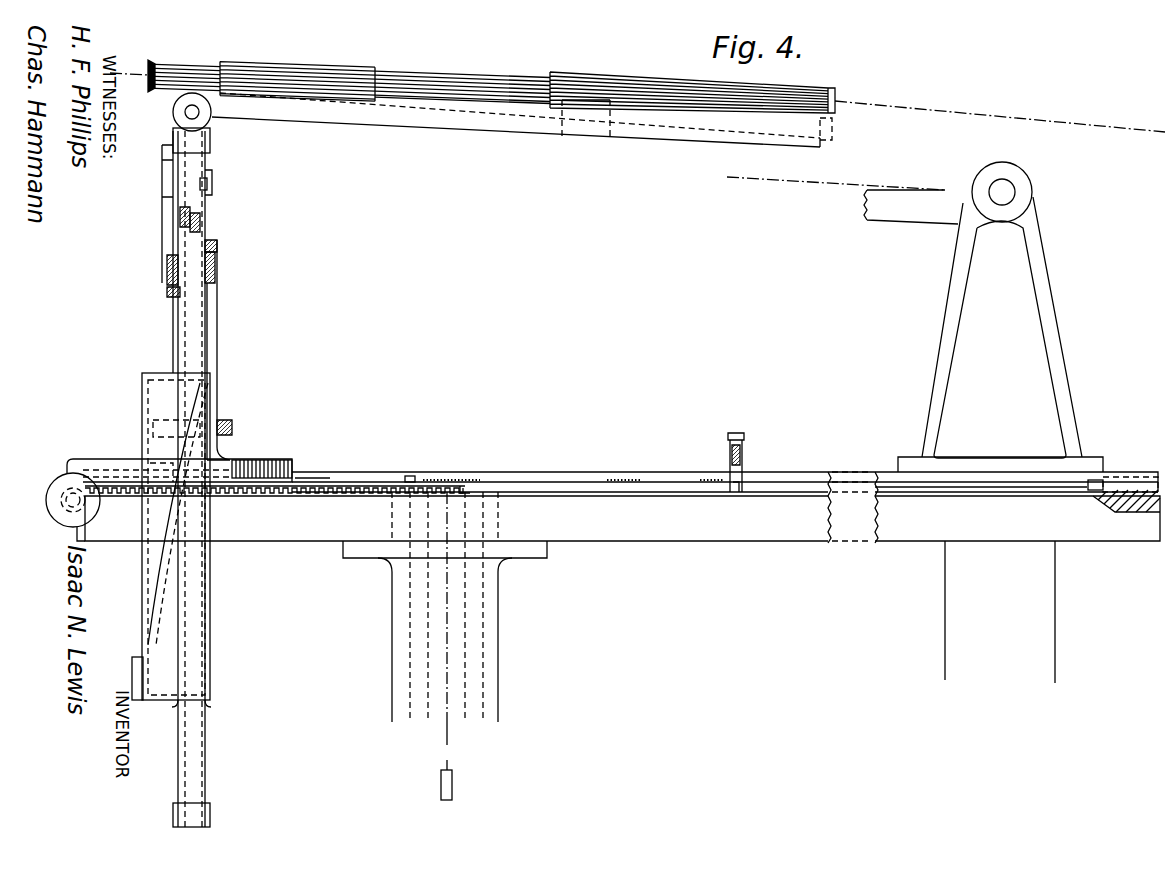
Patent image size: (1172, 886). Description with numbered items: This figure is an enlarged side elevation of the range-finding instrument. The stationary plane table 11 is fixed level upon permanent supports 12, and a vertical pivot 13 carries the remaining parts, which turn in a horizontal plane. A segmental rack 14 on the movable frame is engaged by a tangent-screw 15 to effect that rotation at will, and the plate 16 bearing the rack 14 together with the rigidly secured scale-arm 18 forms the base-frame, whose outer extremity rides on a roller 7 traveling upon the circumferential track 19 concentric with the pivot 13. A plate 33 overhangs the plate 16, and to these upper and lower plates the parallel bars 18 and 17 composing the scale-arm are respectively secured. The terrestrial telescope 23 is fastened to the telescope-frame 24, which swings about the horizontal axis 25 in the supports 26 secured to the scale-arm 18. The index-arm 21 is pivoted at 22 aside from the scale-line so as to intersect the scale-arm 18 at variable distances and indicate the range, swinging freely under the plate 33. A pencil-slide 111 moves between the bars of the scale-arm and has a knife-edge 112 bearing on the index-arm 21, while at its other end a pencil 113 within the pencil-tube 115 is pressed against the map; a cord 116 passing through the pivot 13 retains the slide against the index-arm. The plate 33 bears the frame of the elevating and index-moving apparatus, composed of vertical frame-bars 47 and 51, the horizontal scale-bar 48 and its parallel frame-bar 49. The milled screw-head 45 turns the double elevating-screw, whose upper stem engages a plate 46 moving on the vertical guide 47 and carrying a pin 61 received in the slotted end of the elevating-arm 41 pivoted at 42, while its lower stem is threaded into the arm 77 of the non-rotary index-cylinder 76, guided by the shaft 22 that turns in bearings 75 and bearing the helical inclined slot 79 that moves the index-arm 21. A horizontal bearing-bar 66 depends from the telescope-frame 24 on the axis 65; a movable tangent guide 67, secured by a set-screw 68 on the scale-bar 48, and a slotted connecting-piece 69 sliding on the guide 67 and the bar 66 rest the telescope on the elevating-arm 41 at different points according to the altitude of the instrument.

The roller 7 is at (1125, 477).
The stationary plane table 11 is at (235, 532).
The permanent supports 12 is at (996, 589).
The vertical pivot 13 is at (473, 595).
The segmental rack 14 is at (110, 493).
The tangent-screw 15 is at (60, 502).
The plate 16 is at (262, 493).
The parallel bar 17 is at (772, 493).
The scale-arm 18 is at (348, 472).
The circumferential track 19 is at (1122, 505).
The index-arm 21 is at (312, 472).
The axis of the index-arm 22 is at (177, 324).
The terrestrial telescope 23 is at (637, 96).
The telescope-frame 24 is at (585, 158).
The horizontal axis 25 is at (1017, 190).
The supports 26 is at (1062, 340).
The plate 33 is at (255, 462).
The elevating-arm 41 is at (201, 224).
The pivot 42 is at (216, 247).
The milled screw-head 45 is at (233, 427).
The plate 46 is at (213, 183).
The vertical frame-bar 47 is at (218, 322).
The horizontal scale-bar 48 is at (170, 268).
The frame-bar 49 is at (216, 270).
The vertical frame-bar 51 is at (191, 479).
The pin 61 is at (213, 175).
The axis 65 is at (190, 112).
The horizontal bearing-bar 66 is at (182, 214).
The movable tangent guide 67 is at (166, 178).
The set-screw 68 is at (170, 292).
The slotted connecting-piece 69 is at (168, 198).
The bearings 75 is at (212, 142).
The index-cylinder 76 is at (160, 405).
The arm 77 is at (132, 670).
The inclined slot 79 is at (176, 455).
The pencil-slide 111 is at (448, 479).
The knife-edge 112 is at (410, 476).
The pencil 113 is at (735, 494).
The pencil-tube 115 is at (744, 452).
The cord 116 is at (470, 744).